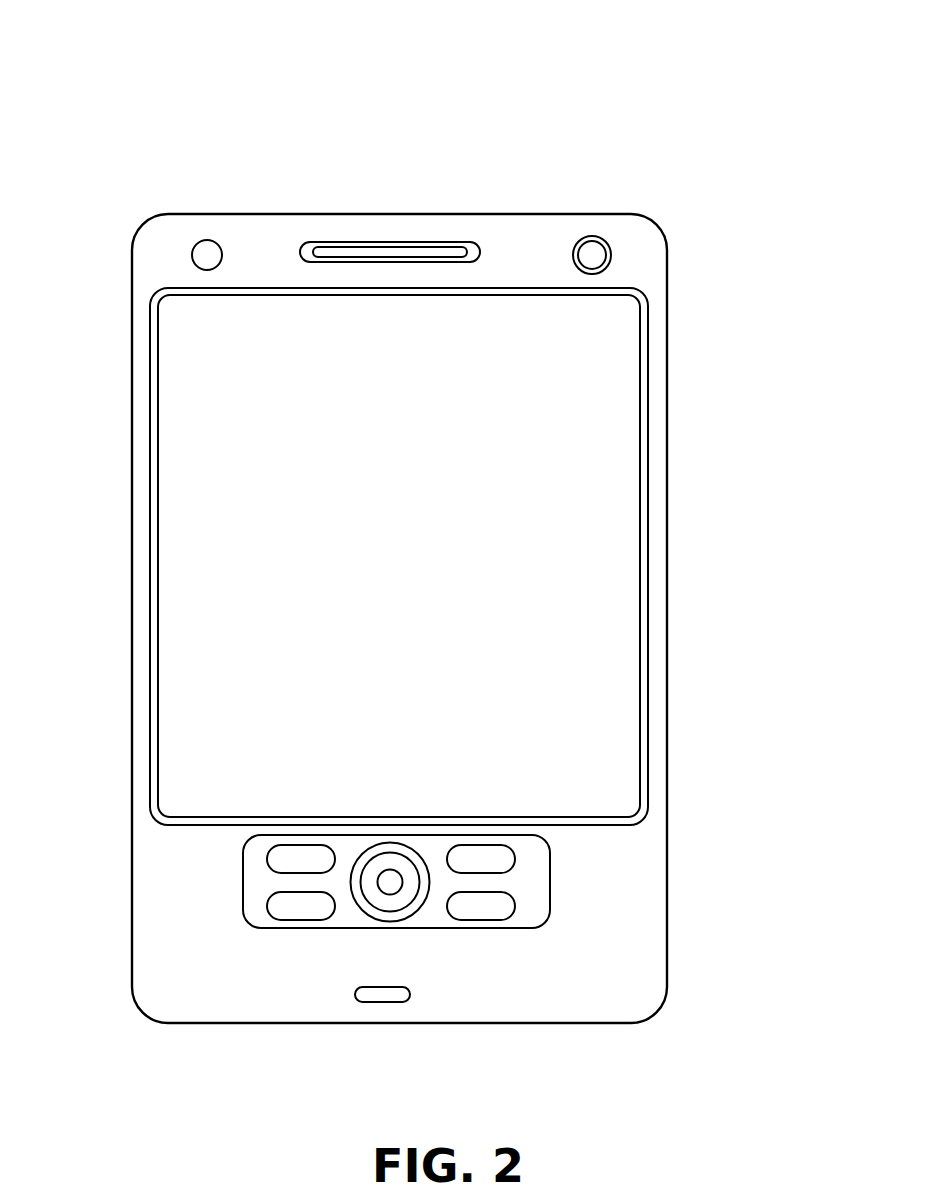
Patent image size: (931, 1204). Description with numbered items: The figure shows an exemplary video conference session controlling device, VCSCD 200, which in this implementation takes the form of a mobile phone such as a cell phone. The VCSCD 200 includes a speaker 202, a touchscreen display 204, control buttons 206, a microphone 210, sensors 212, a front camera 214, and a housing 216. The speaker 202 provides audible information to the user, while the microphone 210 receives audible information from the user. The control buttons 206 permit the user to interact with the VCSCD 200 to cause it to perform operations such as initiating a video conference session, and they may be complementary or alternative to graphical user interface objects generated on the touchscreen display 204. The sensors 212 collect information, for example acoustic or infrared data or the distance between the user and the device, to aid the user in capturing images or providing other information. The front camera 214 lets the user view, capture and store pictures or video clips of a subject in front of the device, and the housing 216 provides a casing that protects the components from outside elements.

The video conference session controlling device 200 is at (134, 70).
The speaker 202 is at (392, 242).
The touchscreen display 204 is at (564, 288).
The control buttons 206 is at (550, 883).
The microphone 210 is at (385, 994).
The sensors 212 is at (612, 255).
The front camera 214 is at (207, 240).
The housing 216 is at (648, 557).